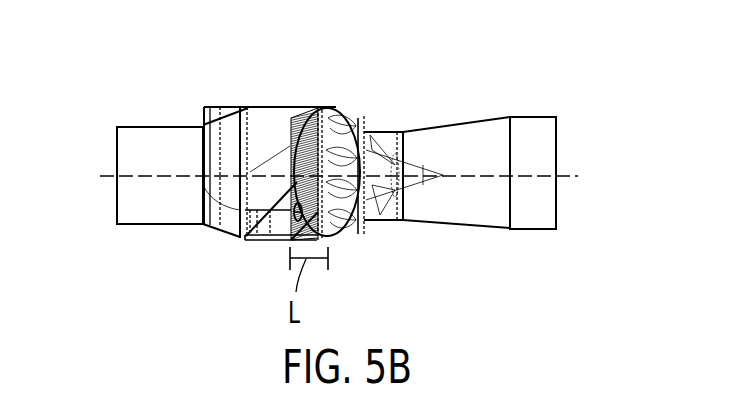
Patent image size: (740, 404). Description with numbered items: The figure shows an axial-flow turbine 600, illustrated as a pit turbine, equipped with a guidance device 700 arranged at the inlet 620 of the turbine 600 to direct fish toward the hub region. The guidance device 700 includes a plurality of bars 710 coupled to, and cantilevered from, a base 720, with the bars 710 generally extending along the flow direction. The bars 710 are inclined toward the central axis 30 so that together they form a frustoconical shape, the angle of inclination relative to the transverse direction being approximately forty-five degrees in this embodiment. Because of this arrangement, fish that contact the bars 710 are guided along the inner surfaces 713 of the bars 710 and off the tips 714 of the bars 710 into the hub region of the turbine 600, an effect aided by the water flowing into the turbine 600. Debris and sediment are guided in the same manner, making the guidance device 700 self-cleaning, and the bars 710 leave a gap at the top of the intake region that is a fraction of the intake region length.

The axial-flow turbine 600 is at (379, 173).
The inlet 620 is at (270, 152).
The guidance device 700 is at (304, 117).
The bars 710 is at (246, 236).
The inner surfaces 713 is at (318, 212).
The tips 714 is at (322, 133).
The base 720 is at (302, 140).
The central axis 30 is at (574, 176).